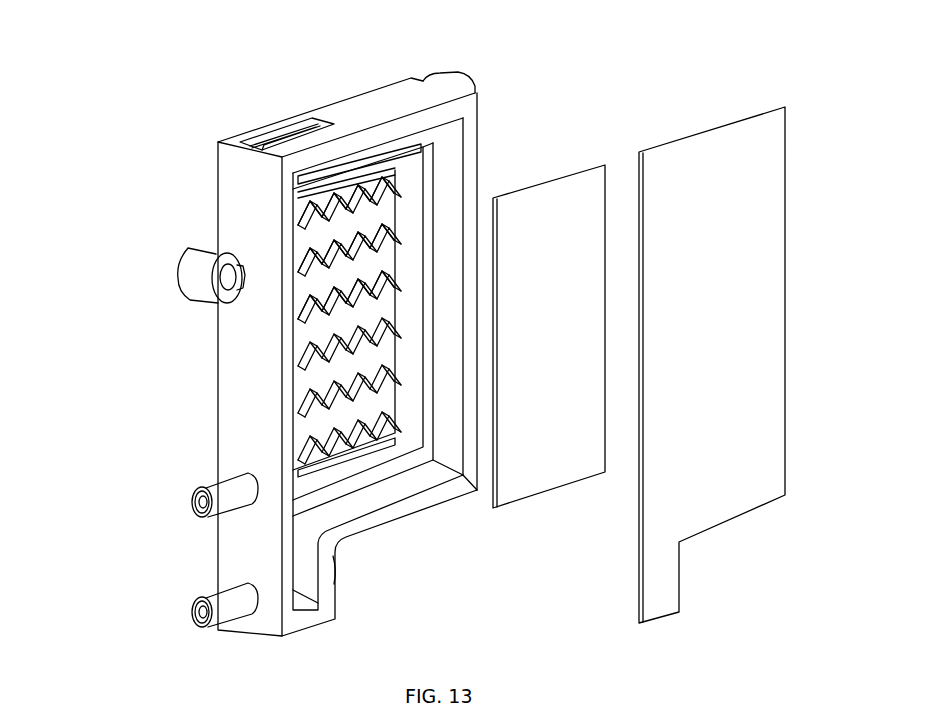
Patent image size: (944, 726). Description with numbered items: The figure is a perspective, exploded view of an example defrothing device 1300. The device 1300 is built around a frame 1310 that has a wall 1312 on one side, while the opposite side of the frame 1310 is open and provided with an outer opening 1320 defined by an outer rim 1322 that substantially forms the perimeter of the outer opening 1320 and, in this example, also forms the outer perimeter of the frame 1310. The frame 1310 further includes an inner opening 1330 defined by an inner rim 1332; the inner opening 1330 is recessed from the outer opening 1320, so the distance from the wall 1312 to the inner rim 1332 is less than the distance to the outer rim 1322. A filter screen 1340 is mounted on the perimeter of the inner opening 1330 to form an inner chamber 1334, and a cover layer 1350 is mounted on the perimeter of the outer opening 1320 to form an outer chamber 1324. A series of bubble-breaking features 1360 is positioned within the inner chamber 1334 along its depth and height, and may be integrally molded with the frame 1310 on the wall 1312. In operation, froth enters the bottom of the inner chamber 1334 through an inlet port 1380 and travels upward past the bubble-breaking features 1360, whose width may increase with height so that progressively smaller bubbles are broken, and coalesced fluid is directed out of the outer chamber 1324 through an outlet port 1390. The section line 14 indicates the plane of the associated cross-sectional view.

The defrothing device 1300 is at (640, 38).
The frame 1310 is at (316, 120).
The wall 1312 is at (400, 208).
The outer opening 1320 is at (470, 133).
The outer rim 1322 is at (437, 160).
The outer chamber 1324 is at (412, 462).
The inner opening 1330 is at (304, 370).
The inner rim 1332 is at (363, 173).
The inner chamber 1334 is at (303, 416).
The filter screen 1340 is at (596, 187).
The cover layer 1350 is at (772, 136).
The bubble-breaking features 1360 is at (305, 203).
The inlet port 1380 is at (198, 490).
The outlet port 1390 is at (222, 597).
The cross-sectional view line 14 is at (348, 53).